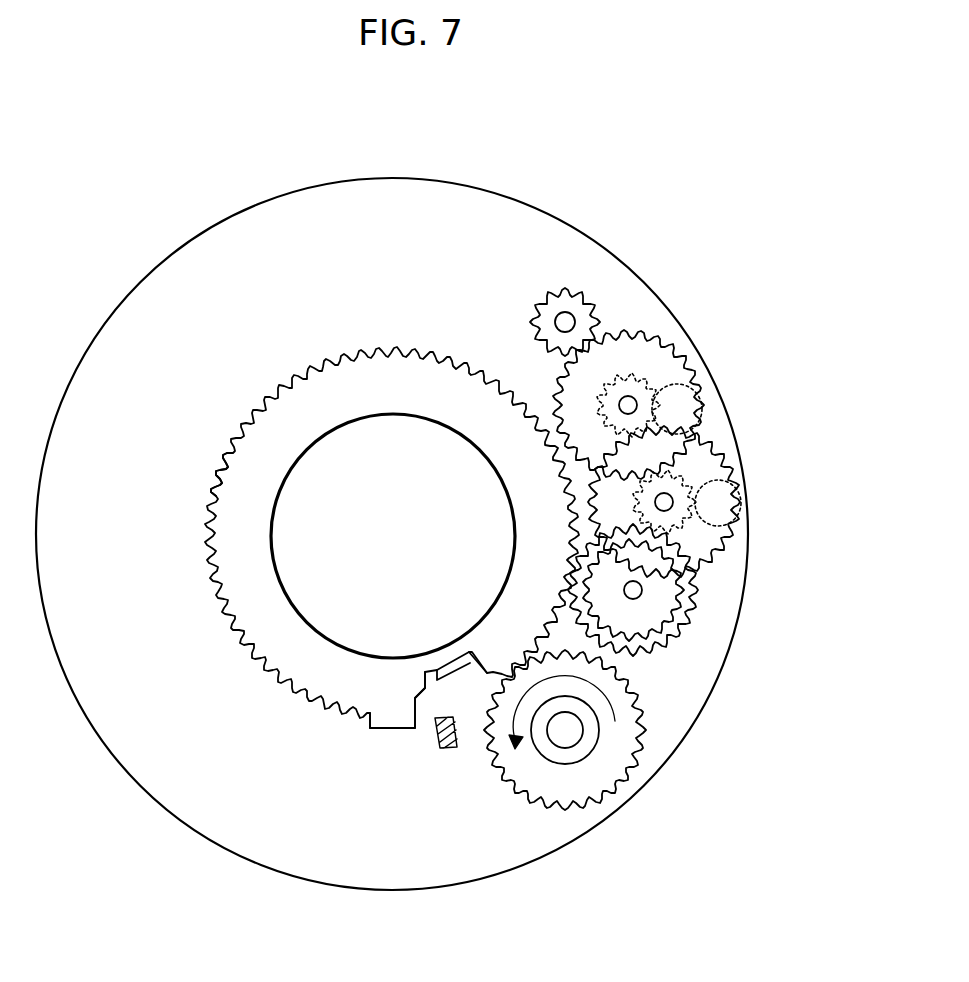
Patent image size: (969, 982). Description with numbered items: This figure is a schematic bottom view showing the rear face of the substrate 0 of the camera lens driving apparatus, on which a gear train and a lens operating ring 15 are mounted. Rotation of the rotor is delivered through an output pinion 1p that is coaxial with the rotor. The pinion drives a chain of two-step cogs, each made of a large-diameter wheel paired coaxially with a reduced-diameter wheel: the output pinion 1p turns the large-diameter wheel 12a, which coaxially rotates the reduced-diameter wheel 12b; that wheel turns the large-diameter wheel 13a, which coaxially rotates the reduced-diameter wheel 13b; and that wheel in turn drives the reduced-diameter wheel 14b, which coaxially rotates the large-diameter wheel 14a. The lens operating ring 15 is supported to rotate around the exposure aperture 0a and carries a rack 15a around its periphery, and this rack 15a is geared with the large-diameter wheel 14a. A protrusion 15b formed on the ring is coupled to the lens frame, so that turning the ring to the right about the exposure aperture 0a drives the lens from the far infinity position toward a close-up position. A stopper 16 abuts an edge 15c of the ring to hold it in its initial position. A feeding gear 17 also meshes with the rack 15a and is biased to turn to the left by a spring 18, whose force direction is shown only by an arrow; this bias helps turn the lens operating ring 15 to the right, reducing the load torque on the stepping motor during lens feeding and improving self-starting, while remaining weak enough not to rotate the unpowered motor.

The substrate 0 is at (244, 213).
The exposure aperture 0a is at (273, 520).
The output pinion 1p is at (542, 295).
The large-diameter wheel 12a is at (692, 346).
The reduced-diameter wheel 12b is at (704, 393).
The large-diameter wheel 13a is at (740, 465).
The reduced-diameter wheel 13b is at (748, 520).
The large-diameter wheel 14a is at (700, 588).
The reduced-diameter wheel 14b is at (682, 607).
The lens operating ring 15 is at (231, 440).
The rack 15a is at (206, 512).
The protrusion 15b is at (450, 666).
The edge 15c is at (410, 712).
The stopper 16 is at (445, 752).
The feeding gear 17 is at (637, 763).
The spring 18 is at (617, 707).